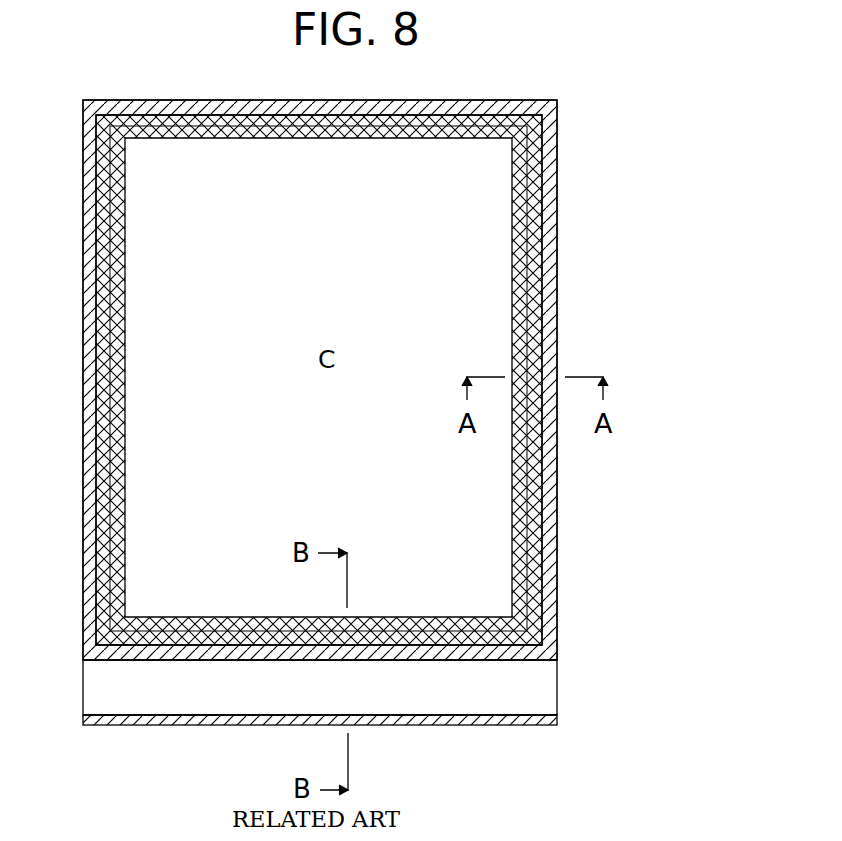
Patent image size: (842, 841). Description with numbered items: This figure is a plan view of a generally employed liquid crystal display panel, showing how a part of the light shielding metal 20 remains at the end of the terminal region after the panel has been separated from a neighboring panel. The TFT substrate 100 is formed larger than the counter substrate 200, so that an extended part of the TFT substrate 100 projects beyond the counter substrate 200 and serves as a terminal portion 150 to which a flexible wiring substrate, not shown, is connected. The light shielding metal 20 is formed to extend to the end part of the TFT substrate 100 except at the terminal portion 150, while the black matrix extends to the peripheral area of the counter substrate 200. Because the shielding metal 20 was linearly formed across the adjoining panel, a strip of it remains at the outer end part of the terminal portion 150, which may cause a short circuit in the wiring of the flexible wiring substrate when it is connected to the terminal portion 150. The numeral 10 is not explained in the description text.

The counter substrate 200 is at (557, 128).
The light shielding metal 20 is at (557, 185).
The display panel 10 is at (482, 290).
The TFT substrate 100 is at (558, 672).
The terminal portion 150 is at (538, 697).